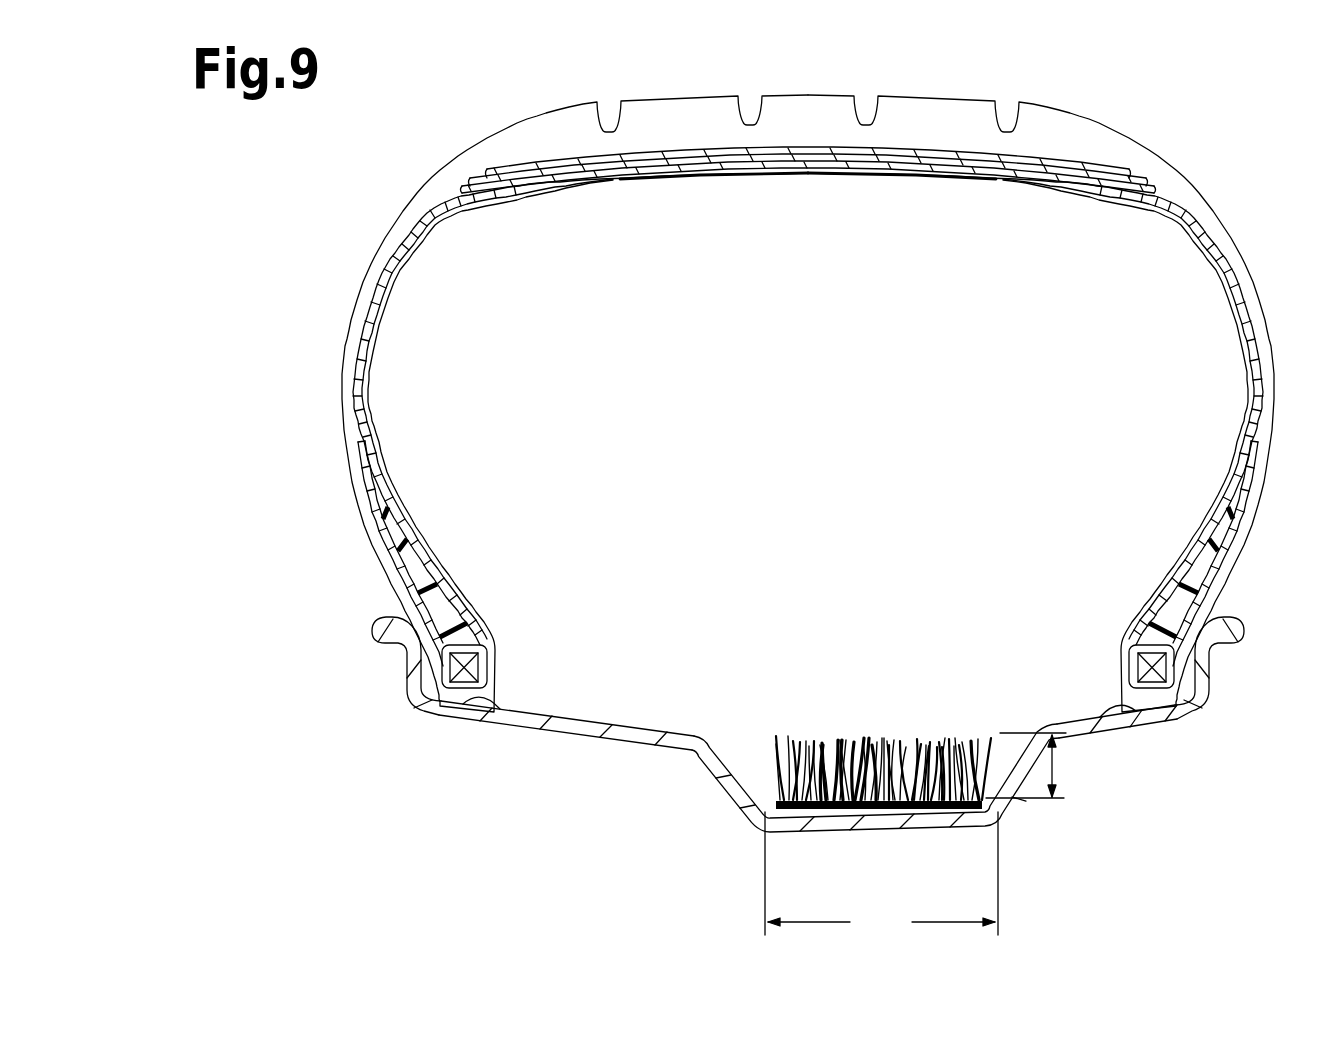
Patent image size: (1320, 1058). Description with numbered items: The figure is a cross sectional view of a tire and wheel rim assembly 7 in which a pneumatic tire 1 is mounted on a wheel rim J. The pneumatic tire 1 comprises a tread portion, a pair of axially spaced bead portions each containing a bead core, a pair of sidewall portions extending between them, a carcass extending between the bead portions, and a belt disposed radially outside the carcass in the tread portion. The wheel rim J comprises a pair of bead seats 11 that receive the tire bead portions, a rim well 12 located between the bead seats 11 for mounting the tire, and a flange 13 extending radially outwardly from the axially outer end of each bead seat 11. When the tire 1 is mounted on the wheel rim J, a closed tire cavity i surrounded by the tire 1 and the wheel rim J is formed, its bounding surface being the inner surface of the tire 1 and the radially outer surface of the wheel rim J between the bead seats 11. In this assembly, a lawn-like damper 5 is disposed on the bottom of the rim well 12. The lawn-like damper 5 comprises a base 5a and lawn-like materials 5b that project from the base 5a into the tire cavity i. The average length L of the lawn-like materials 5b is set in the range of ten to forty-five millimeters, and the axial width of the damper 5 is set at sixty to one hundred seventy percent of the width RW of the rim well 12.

The pneumatic tire 1 is at (360, 568).
The tire and rim assembly 7 is at (278, 605).
The wheel rim J is at (378, 670).
The flange 13 is at (410, 695).
The bead seat 11 is at (497, 708).
The rim well 12 is at (803, 846).
The lawn-like damper 5 is at (577, 780).
The base 5a is at (772, 806).
The lawn-like materials 5b is at (772, 752).
The tire cavity i is at (835, 327).
The average length of the lawn-like materials L is at (1030, 765).
The width of the rim well RW is at (881, 873).